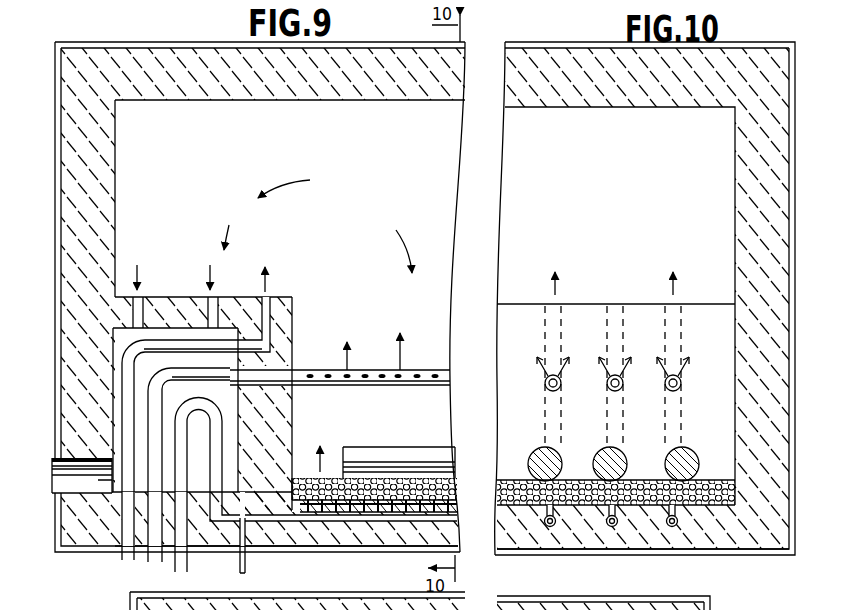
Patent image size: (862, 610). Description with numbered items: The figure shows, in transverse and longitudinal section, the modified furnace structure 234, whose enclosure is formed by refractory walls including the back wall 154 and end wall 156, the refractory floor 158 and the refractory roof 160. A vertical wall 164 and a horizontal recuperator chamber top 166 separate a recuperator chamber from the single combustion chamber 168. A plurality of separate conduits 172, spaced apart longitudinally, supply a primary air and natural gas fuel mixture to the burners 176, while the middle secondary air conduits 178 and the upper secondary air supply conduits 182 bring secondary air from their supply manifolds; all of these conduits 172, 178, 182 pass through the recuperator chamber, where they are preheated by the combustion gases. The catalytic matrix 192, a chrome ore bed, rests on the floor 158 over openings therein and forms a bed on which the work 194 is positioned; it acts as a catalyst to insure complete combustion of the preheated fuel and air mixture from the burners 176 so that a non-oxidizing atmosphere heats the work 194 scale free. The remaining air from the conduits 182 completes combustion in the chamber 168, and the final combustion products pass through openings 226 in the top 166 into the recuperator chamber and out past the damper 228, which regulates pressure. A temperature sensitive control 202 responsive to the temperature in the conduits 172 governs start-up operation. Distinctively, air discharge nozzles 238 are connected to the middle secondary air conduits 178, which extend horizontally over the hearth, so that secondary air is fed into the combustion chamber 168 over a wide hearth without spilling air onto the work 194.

In FIG. 9, the back wall 154 is at (115, 180).
In FIG. 10, the back wall 154 is at (642, 152).
In FIG. 9, the end wall 156 is at (307, 150).
In FIG. 10, the end wall 156 is at (794, 332).
In FIG. 9, the floor 158 is at (385, 540).
In FIG. 10, the floor 158 is at (628, 548).
In FIG. 10, the roof 160 is at (570, 42).
In FIG. 9, the vertical wall 164 is at (292, 332).
In FIG. 9, the recuperator chamber top 166 is at (152, 295).
In FIG. 10, the recuperator chamber top 166 is at (511, 305).
In FIG. 9, the single combustion chamber 168 is at (372, 222).
In FIG. 10, the single combustion chamber 168 is at (604, 222).
In FIG. 9, the conduits 172 is at (220, 433).
In FIG. 9, the burners 176 is at (455, 525).
In FIG. 10, the burners 176 is at (680, 530).
In FIG. 9, the middle secondary air conduits 178 is at (148, 392).
In FIG. 9, the upper secondary air supply conduits 182 is at (124, 364).
In FIG. 9, the catalytic matrix 192 is at (455, 492).
In FIG. 10, the catalytic matrix 192 is at (732, 492).
In FIG. 9, the work 194 is at (388, 447).
In FIG. 10, the work 194 is at (540, 450).
In FIG. 9, the temperature sensitive control 202 is at (246, 560).
In FIG. 9, the openings 226 is at (215, 300).
In FIG. 10, the openings 226 is at (562, 316).
In FIG. 9, the damper 228 is at (52, 476).
In FIG. 9, the furnace structure 234 is at (168, 25).
In FIG. 10, the furnace structure 234 is at (794, 272).
In FIG. 9, the air discharge nozzles 238 is at (362, 386).
In FIG. 10, the air discharge nozzles 238 is at (549, 390).